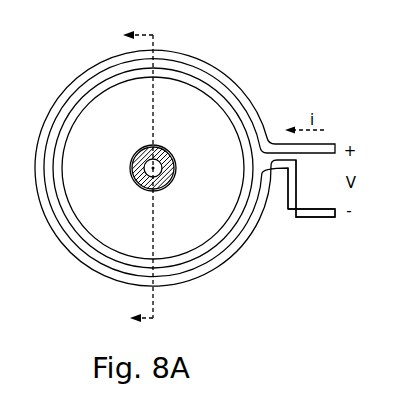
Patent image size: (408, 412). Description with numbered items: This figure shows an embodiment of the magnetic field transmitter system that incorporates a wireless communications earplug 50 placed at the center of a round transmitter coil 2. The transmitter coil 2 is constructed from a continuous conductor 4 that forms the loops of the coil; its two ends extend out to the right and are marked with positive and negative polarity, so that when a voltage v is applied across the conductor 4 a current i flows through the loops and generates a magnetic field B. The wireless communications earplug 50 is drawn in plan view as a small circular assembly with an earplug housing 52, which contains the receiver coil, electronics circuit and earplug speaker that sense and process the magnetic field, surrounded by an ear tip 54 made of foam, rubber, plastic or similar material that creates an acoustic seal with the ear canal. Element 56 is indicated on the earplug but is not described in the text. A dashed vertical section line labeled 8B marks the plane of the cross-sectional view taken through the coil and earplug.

The transmitter coil 2 is at (90, 66).
The continuous conductor 4 is at (292, 218).
The wireless communications earplug 50 is at (150, 167).
The earplug housing 52 is at (168, 186).
The ear tip 54 is at (167, 151).
The central bore 56 is at (145, 172).
The section line 8B is at (123, 179).